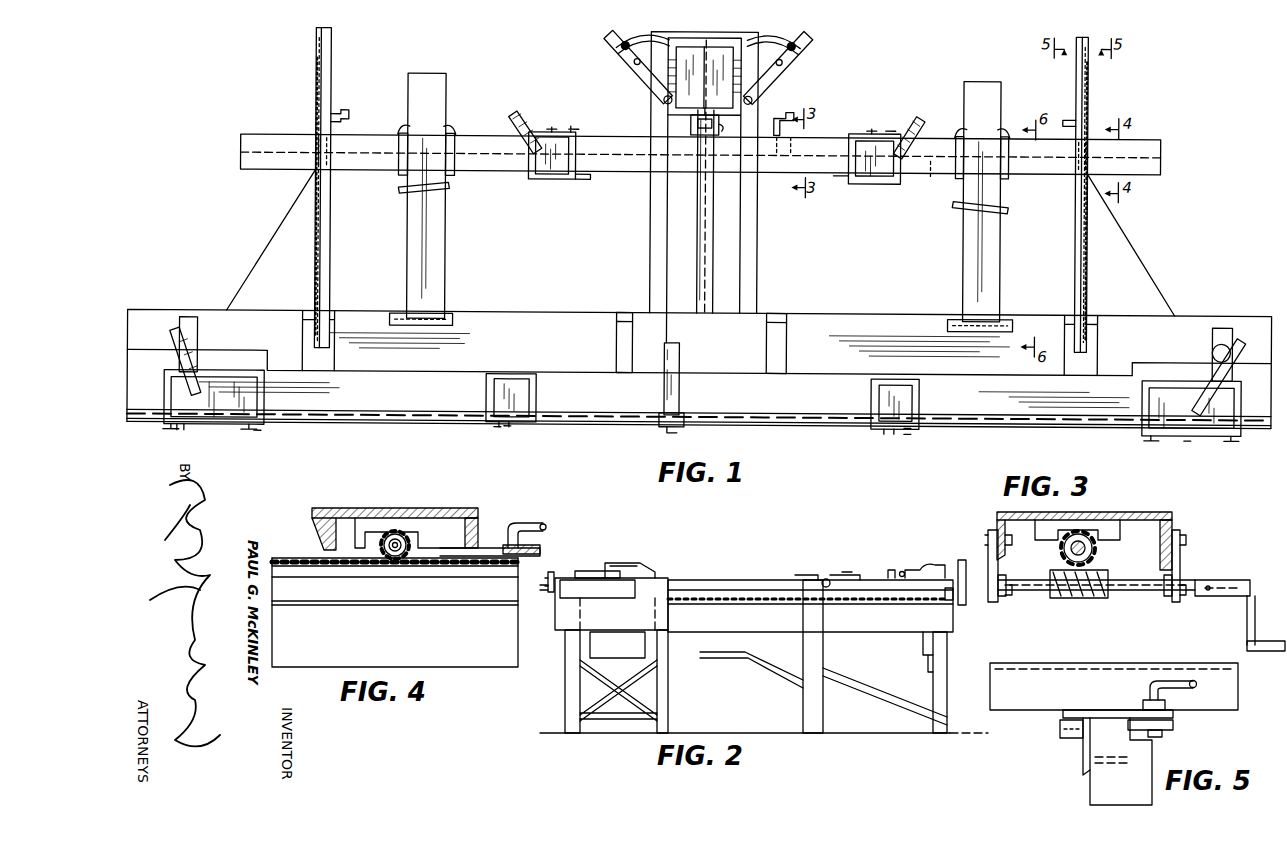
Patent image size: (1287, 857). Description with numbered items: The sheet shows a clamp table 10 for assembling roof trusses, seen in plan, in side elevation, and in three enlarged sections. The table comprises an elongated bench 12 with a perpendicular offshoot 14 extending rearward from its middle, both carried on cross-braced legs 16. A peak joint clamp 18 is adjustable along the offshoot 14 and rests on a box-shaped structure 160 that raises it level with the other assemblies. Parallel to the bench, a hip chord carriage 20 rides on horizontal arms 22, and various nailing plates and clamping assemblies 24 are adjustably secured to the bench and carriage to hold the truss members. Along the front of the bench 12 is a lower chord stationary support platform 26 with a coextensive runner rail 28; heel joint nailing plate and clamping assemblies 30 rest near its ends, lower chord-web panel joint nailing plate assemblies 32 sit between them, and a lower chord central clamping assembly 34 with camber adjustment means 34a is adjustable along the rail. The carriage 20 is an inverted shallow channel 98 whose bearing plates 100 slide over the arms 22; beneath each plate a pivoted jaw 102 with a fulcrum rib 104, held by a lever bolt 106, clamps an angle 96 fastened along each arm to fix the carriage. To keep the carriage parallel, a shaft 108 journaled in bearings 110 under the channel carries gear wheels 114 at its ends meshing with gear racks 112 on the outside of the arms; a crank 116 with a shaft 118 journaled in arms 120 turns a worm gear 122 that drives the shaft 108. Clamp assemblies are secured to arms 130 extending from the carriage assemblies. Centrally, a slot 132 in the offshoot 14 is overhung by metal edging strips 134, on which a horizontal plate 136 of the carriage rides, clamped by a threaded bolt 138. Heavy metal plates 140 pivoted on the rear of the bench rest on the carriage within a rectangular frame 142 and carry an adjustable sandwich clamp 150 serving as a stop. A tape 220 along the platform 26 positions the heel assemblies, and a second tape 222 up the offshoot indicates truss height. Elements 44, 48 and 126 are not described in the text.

In FIG. 1, the clamp table 10 is at (550, 120).
In FIG. 1, the elongated bench 12 is at (540, 310).
In FIG. 2, the elongated bench 12 is at (617, 645).
In FIG. 1, the perpendicular offshoot 14 is at (758, 272).
In FIG. 2, the perpendicular offshoot 14 is at (875, 628).
In FIG. 2, the legs 16 is at (660, 690).
In FIG. 1, the peak joint clamp 18 is at (752, 108).
In FIG. 2, the peak joint clamp 18 is at (896, 576).
In FIG. 1, the hip chord carriage 20 is at (277, 146).
In FIG. 4, the hip chord carriage 20 is at (432, 508).
In FIG. 2, the hip chord carriage 20 is at (808, 579).
In FIG. 3, the hip chord carriage 20 is at (1156, 511).
In FIG. 5, the hip chord carriage 20 is at (1082, 663).
In FIG. 1, the arms 22 is at (330, 235).
In FIG. 4, the arms 22 is at (395, 612).
In FIG. 5, the arms 22 is at (1090, 796).
In FIG. 1, the nailing plates and clamping assemblies 24 is at (574, 130).
In FIG. 2, the nailing plates and clamping assemblies 24 is at (658, 572).
In FIG. 1, the lower chord stationary support platform 26 is at (398, 380).
In FIG. 2, the lower chord stationary support platform 26 is at (597, 598).
In FIG. 1, the runner rail 28 is at (796, 426).
In FIG. 2, the runner rail 28 is at (543, 600).
In FIG. 1, the heel joint nailing plate and clamping assemblies 30 is at (265, 391).
In FIG. 1, the lower chord-web panel joint nailing plate assemblies 32 is at (537, 393).
In FIG. 1, the lower chord central clamping assembly 34 is at (680, 395).
In FIG. 1, the camber adjustment means 34a is at (672, 430).
In FIG. 2, the stop 44 is at (556, 580).
In FIG. 1, the clamp cylinder 48 is at (197, 353).
In FIG. 5, the angle 96 is at (1095, 740).
In FIG. 3, the inverted shallow channel 98 is at (1173, 530).
In FIG. 5, the inverted shallow channel 98 is at (1024, 693).
In FIG. 4, the bearing plates 100 is at (490, 548).
In FIG. 5, the bearing plates 100 is at (1116, 710).
In FIG. 4, the pivoted jaw 102 is at (538, 544).
In FIG. 2, the pivoted jaw 102 is at (557, 541).
In FIG. 5, the pivoted jaw 102 is at (1163, 738).
In FIG. 5, the fulcrum rib 104 is at (1174, 724).
In FIG. 1, the lever bolt 106 is at (348, 110).
In FIG. 4, the lever bolt 106 is at (534, 522).
In FIG. 5, the lever bolt 106 is at (1175, 680).
In FIG. 1, the shaft 108 is at (927, 183).
In FIG. 4, the shaft 108 is at (398, 552).
In FIG. 3, the shaft 108 is at (1062, 556).
In FIG. 4, the bearings 110 is at (410, 533).
In FIG. 3, the bearings 110 is at (1112, 548).
In FIG. 1, the gear racks 112 is at (314, 286).
In FIG. 4, the gear racks 112 is at (300, 557).
In FIG. 2, the gear racks 112 is at (740, 592).
In FIG. 5, the gear racks 112 is at (1058, 729).
In FIG. 4, the gear wheels 114 is at (382, 560).
In FIG. 3, the gear wheels 114 is at (1080, 530).
In FIG. 1, the crank 116 is at (801, 116).
In FIG. 3, the crank 116 is at (1247, 630).
In FIG. 3, the crank shaft 118 is at (1146, 590).
In FIG. 2, the arms 120 is at (969, 578).
In FIG. 3, the arms 120 is at (988, 572).
In FIG. 3, the worm gear 122 is at (1086, 600).
In FIG. 1, the carriage housing 126 is at (565, 180).
In FIG. 1, the arms 130 is at (515, 102).
In FIG. 1, the slot 132 is at (713, 265).
In FIG. 1, the metal edging strips 134 is at (700, 238).
In FIG. 1, the horizontal plate 136 is at (722, 132).
In FIG. 1, the threaded bolt 138 is at (695, 136).
In FIG. 1, the heavy metal plates 140 is at (445, 265).
In FIG. 1, the rectangular frame 142 is at (703, 144).
In FIG. 1, the sandwich clamp 150 is at (440, 196).
In FIG. 2, the box-shaped structure 160 is at (953, 595).
In FIG. 1, the tape 220 is at (788, 421).
In FIG. 1, the second tape 222 is at (665, 262).